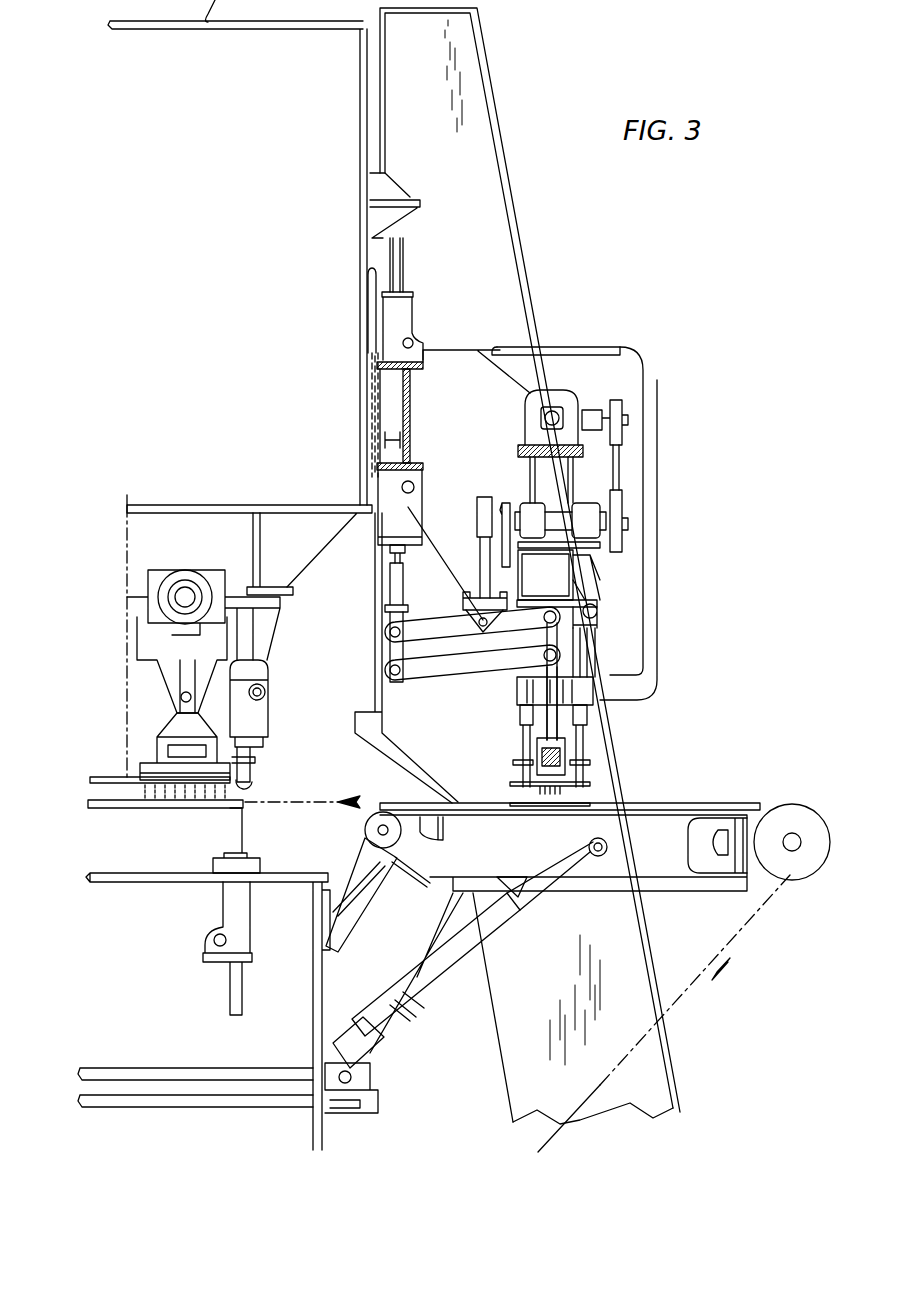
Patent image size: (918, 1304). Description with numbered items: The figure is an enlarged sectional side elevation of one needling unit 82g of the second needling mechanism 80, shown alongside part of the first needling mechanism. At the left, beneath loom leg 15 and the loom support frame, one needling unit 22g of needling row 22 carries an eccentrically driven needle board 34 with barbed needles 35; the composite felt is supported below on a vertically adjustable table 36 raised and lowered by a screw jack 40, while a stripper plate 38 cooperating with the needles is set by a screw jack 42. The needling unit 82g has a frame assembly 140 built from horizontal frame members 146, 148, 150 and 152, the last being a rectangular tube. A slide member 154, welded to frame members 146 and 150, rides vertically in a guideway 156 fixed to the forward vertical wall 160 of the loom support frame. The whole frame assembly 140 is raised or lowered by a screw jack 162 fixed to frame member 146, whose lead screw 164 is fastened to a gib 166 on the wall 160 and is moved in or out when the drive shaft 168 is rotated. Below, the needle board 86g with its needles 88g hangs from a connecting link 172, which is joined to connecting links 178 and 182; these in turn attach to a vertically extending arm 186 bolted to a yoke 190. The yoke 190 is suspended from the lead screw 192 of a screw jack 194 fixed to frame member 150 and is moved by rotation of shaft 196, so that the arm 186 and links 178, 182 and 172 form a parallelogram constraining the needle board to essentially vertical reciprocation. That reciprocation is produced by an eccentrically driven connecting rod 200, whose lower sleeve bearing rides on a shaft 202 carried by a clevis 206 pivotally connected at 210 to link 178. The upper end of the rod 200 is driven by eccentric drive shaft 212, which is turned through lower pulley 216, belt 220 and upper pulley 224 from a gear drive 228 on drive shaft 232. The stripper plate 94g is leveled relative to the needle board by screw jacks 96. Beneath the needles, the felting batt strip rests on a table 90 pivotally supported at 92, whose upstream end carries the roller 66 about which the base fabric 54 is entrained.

The loom support leg 15 is at (505, 240).
The forward vertical wall 160 is at (365, 153).
The gib 166 is at (420, 207).
The lead screw 164 is at (400, 262).
The screw jack 162 is at (405, 310).
The drive shaft 168 is at (412, 341).
The guideway 156 is at (370, 270).
The slide member 154 is at (368, 357).
The horizontal frame member 146 is at (425, 369).
The horizontal frame member 150 is at (412, 472).
The shaft 196 is at (414, 488).
The screw jack 194 is at (398, 514).
The lead screw 192 is at (400, 557).
The yoke 190 is at (395, 590).
The vertically extending arm 186 is at (392, 655).
The connecting link 178 is at (453, 628).
The connecting link 182 is at (465, 662).
The pivotal connection 210 is at (485, 627).
The connecting rod 200 is at (483, 553).
The shaft 202 is at (470, 600).
The clevis 206 is at (476, 620).
The frame assembly 140 is at (652, 357).
The second needling mechanism 80 is at (572, 335).
The gear drive 228 is at (553, 400).
The drive shaft 232 is at (557, 413).
The needling unit 82g is at (522, 414).
The horizontal frame member 148 is at (518, 457).
The upper pulley 224 is at (625, 410).
The belt 220 is at (616, 468).
The lower pulley 216 is at (622, 540).
The drive shaft 212 is at (560, 520).
The horizontal frame member 152 is at (522, 585).
The screw jack 96 is at (522, 712).
The connecting link 172 is at (548, 745).
The needle board 86g is at (565, 755).
The barbed needles 88g is at (537, 790).
The stripper plate 94g is at (592, 795).
The table 90 is at (458, 800).
The pivotal support 92 is at (380, 828).
The roller 66 is at (788, 865).
The base fabric 54 is at (700, 990).
The screw jack 40 is at (228, 907).
The table 36 is at (190, 808).
The barbed needles 35 is at (142, 790).
The needling row 22 is at (206, 566).
The needling unit 22g is at (172, 570).
The needle board 34 is at (150, 770).
The screw jack 42 is at (252, 723).
The stripper plate 38 is at (252, 785).